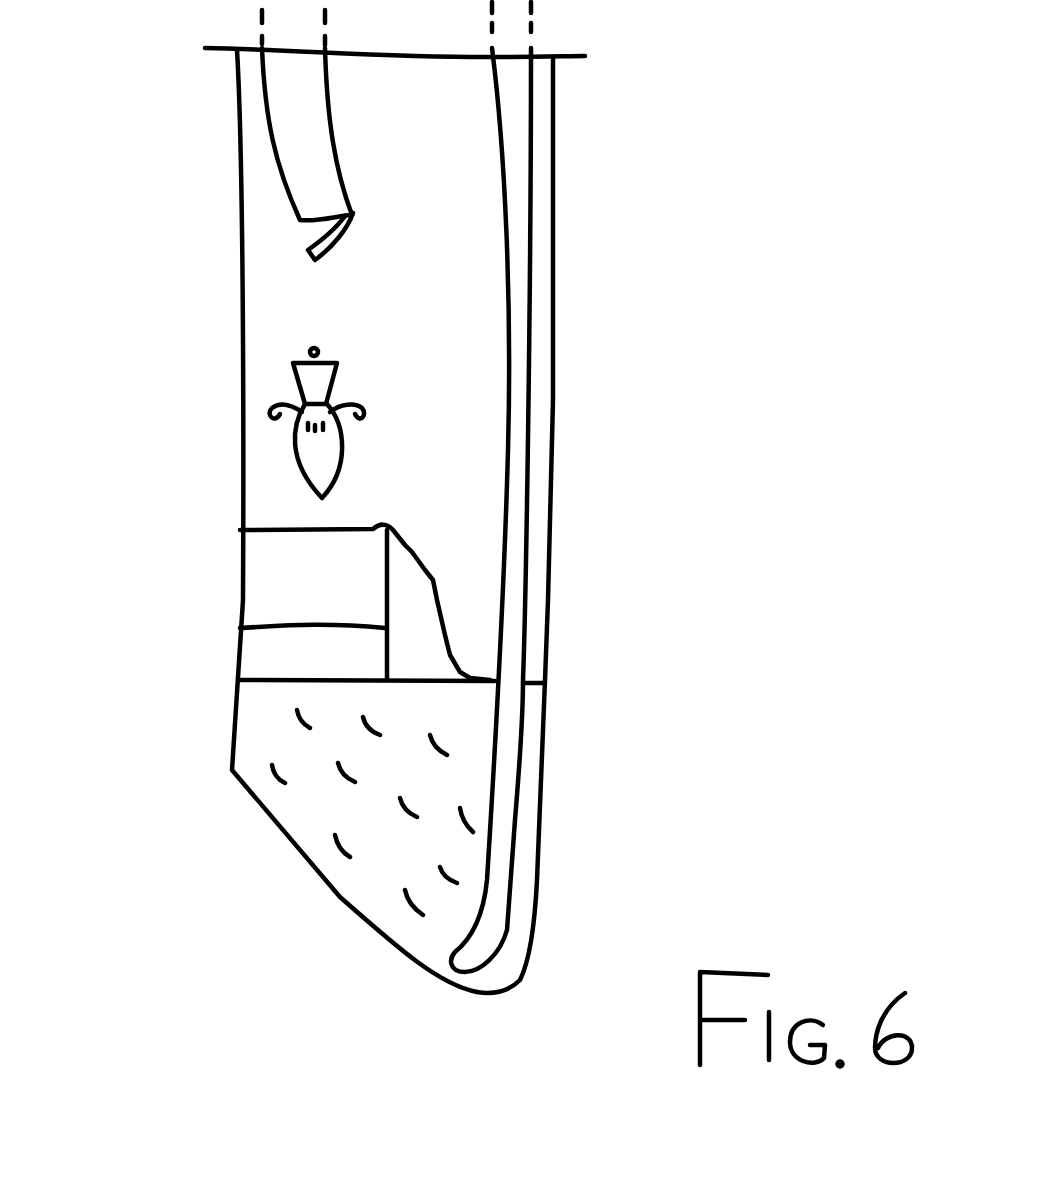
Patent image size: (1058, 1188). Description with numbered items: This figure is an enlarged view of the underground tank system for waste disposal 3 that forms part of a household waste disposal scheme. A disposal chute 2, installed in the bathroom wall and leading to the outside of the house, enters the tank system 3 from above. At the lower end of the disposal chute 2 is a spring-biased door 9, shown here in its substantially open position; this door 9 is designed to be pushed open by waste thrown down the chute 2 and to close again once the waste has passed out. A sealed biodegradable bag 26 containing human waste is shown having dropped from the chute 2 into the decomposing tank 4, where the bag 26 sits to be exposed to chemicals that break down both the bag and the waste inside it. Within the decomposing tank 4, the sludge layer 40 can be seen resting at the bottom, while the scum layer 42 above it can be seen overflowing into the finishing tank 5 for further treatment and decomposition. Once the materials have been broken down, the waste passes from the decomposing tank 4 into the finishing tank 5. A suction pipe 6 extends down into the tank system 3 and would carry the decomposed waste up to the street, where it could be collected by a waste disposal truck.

The disposal chute 2 is at (290, 137).
The tank system for waste disposal 3 is at (610, 468).
The decomposing tank 4 is at (270, 530).
The finishing tank 5 is at (363, 882).
The suction pipe 6 is at (507, 745).
The spring-biased door 9 is at (300, 258).
The biodegradable bag 26 is at (298, 464).
The sludge layer 40 is at (260, 657).
The scum layer 42 is at (267, 588).